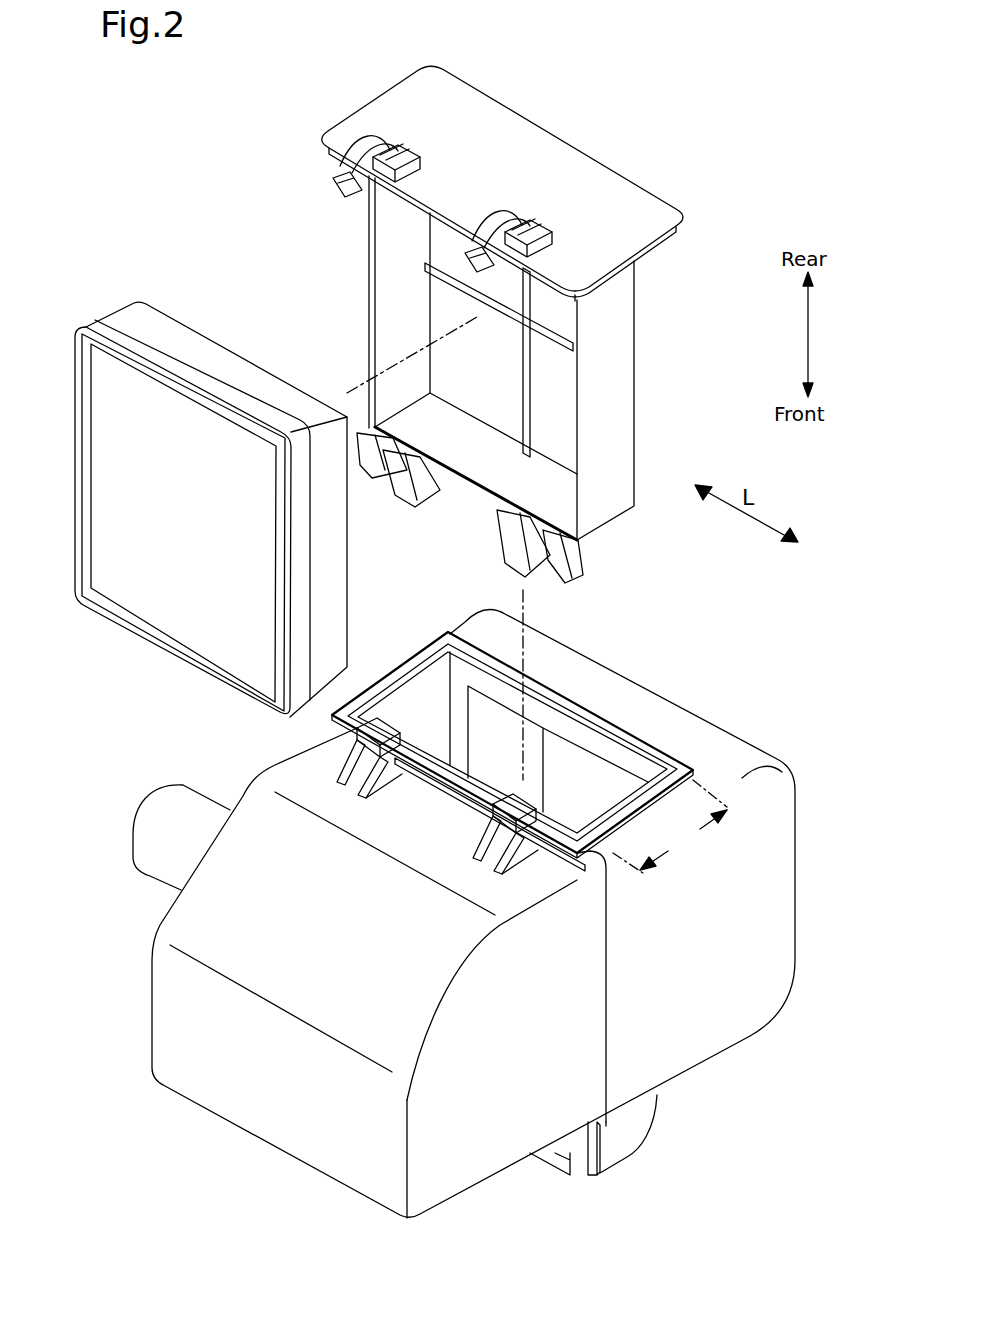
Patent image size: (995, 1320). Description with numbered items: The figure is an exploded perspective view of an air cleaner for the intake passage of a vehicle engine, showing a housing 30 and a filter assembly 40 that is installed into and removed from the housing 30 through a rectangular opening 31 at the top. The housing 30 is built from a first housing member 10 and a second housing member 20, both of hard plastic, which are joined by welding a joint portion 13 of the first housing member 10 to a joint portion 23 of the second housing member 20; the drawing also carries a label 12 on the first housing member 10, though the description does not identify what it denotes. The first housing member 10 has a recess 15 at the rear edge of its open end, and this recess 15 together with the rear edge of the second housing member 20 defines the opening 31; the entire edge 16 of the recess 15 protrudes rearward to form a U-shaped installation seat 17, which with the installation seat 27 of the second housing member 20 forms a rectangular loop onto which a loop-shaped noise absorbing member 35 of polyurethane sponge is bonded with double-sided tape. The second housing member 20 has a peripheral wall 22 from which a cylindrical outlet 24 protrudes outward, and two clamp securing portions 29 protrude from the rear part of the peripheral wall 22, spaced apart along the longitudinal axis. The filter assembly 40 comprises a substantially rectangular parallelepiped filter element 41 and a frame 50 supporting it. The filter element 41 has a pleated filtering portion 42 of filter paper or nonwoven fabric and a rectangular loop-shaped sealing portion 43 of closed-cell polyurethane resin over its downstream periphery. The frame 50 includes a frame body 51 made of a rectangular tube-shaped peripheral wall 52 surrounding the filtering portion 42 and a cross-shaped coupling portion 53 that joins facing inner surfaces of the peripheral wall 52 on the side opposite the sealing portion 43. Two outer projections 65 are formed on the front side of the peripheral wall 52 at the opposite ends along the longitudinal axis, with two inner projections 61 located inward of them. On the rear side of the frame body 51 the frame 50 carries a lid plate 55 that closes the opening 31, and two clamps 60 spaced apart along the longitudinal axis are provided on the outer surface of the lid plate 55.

The first housing member 10 is at (468, 911).
The case body 12 is at (783, 883).
The joint portion 13 is at (605, 1025).
The recess 15 is at (621, 703).
The edge 16 is at (655, 742).
The installation seat 17 is at (701, 719).
The second housing member 20 is at (503, 1165).
The peripheral wall 22 is at (158, 1025).
The joint portion 23 is at (608, 972).
The cylindrical outlet 24 is at (150, 872).
The installation seat 27 is at (455, 793).
The clamp securing portion 29 is at (345, 758).
The housing 30 is at (776, 1116).
The opening 31 is at (562, 730).
The noise absorbing member 35 is at (408, 672).
The filter assembly 40 is at (208, 410).
The filter element 41 is at (211, 471).
The filtering portion 42 is at (152, 322).
The sealing portion 43 is at (97, 322).
The frame 50 is at (486, 347).
The frame body 51 is at (493, 358).
The peripheral wall 52 is at (370, 333).
The coupling portion 53 is at (520, 358).
The lid plate 55 is at (582, 174).
The clamp 60 is at (383, 150).
The inner projection 61 is at (395, 498).
The outer projection 65 is at (363, 468).